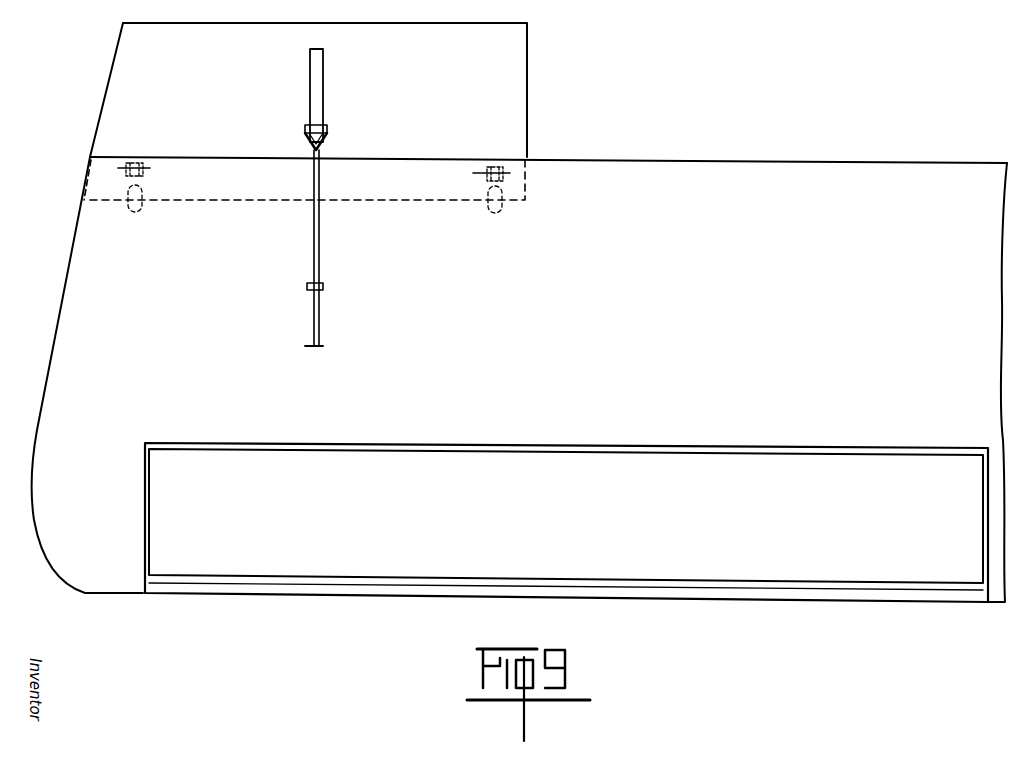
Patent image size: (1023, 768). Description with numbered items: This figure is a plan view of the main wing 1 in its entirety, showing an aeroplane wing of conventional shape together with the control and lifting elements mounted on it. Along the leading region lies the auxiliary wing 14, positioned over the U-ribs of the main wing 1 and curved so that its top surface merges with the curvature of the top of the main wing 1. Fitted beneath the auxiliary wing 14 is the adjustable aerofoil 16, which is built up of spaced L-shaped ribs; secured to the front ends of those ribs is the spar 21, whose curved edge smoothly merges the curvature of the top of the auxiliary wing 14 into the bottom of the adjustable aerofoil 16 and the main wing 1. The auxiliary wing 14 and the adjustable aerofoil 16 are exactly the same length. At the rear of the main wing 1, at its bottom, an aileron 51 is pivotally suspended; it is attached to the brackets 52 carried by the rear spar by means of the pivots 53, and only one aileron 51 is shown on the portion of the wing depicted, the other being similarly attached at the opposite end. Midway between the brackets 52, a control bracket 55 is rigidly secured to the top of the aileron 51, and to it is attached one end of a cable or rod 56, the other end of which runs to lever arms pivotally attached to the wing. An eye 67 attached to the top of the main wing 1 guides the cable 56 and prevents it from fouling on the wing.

The main wing 1 is at (78, 376).
The auxiliary wing 14 is at (798, 568).
The adjustable aerofoil 16 is at (738, 597).
The spar 21 is at (650, 590).
The aileron 51 is at (514, 88).
The bracket 52 is at (496, 206).
The pivot 53 is at (486, 171).
The control bracket 55 is at (323, 92).
The cable or rod 56 is at (319, 238).
The eye 67 is at (323, 287).